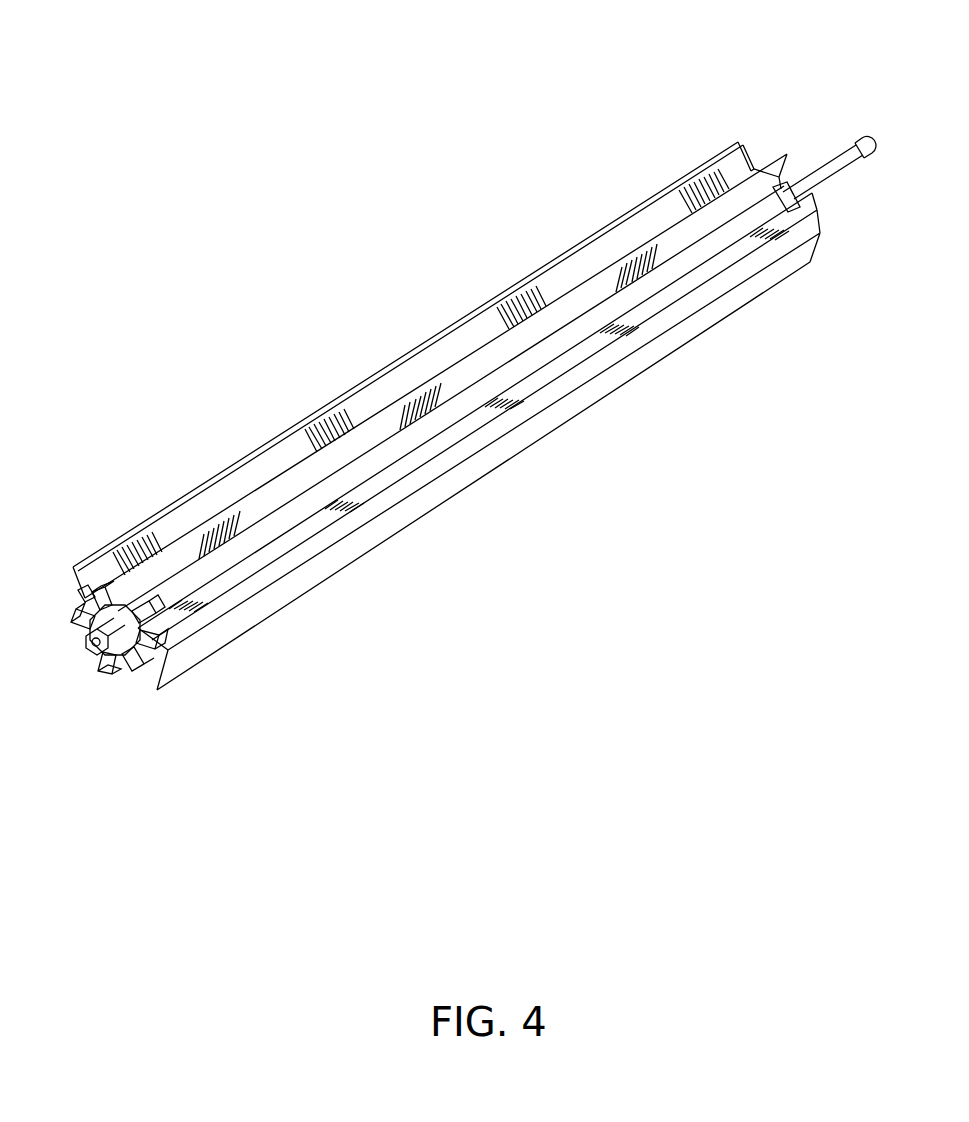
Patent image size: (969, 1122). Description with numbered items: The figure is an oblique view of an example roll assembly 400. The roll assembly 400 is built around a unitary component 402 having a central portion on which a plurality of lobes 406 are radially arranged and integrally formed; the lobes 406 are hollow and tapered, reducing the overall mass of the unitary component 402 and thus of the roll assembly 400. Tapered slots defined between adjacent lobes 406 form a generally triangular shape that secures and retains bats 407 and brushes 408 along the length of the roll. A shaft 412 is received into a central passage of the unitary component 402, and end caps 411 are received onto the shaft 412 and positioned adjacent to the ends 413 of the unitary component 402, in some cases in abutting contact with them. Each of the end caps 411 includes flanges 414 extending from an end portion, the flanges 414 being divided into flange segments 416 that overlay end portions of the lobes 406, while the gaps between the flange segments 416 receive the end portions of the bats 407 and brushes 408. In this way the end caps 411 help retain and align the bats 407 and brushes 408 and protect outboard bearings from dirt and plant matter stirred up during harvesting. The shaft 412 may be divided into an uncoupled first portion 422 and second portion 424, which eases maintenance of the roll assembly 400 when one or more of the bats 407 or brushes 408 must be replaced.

The roll assembly 400 is at (183, 312).
The unitary component 402 is at (451, 398).
The lobes 406 is at (650, 288).
The bats 407 is at (767, 294).
The brushes 408 is at (408, 357).
The end caps 411 is at (800, 204).
The shaft 412 is at (828, 150).
The ends 413 is at (776, 163).
The flanges 414 is at (109, 569).
The flange segments 416 is at (112, 596).
The first portion 422 is at (867, 152).
The second portion 424 is at (96, 652).